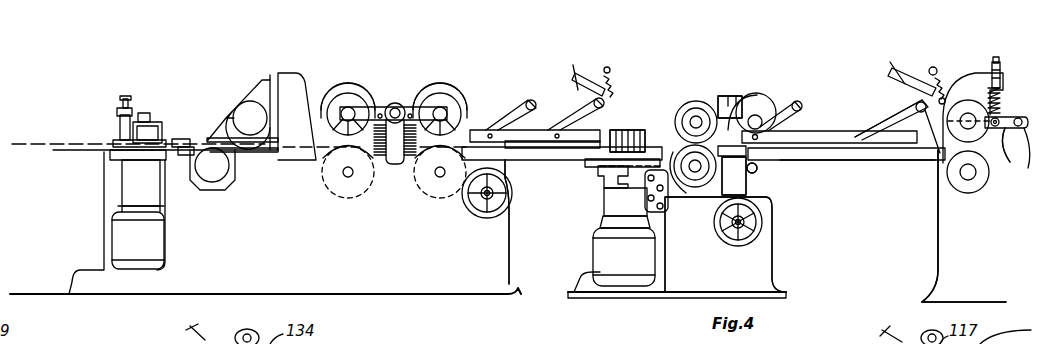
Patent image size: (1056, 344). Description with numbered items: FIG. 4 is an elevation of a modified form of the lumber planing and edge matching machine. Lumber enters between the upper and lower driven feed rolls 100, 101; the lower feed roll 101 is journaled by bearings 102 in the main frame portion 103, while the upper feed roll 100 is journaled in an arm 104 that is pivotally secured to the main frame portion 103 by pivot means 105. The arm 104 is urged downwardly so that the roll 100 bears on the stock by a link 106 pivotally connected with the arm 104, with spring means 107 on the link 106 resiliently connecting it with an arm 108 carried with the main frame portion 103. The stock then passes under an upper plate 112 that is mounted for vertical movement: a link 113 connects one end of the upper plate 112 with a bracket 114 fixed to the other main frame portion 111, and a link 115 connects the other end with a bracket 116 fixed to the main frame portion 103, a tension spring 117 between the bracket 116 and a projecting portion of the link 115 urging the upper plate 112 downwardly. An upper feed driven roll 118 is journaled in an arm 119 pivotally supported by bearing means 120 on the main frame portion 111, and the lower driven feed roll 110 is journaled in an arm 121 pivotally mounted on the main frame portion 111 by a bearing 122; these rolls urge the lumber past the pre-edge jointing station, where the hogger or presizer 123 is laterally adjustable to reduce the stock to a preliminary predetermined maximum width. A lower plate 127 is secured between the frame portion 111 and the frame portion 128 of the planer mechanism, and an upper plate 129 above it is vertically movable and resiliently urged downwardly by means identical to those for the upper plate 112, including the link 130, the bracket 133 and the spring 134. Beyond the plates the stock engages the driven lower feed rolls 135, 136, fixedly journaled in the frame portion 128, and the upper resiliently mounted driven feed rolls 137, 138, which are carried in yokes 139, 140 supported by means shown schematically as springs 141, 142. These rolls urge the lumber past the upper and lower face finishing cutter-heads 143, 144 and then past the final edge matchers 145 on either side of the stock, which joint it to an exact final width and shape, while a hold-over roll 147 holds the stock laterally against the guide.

The upper feed roll 100 is at (955, 134).
The lower feed roll 101 is at (958, 191).
The bearings 102 is at (958, 179).
The main frame portion 103 is at (940, 272).
The arm 104 is at (1008, 129).
The pivot means 105 is at (1028, 152).
The link 106 is at (996, 63).
The spring means 107 is at (1007, 97).
The arm 108 is at (970, 79).
The lower feed roll 110 is at (693, 174).
The main frame portion 111 is at (768, 282).
The upper plate 112 is at (866, 122).
The link 113 is at (784, 98).
The bracket 114 is at (808, 93).
The link 115 is at (900, 106).
The bracket 116 is at (900, 96).
The tension spring 117 is at (935, 66).
The upper feed driven roll 118 is at (693, 117).
The arm 119 is at (727, 97).
The bearing means 120 is at (753, 96).
The arm 121 is at (708, 196).
The bearing 122 is at (770, 167).
The hogger or presizer 123 is at (647, 130).
The lower plate 127 is at (568, 161).
The frame portion 128 is at (503, 274).
The upper plate 129 is at (555, 133).
The link 130 is at (500, 128).
The bracket 133 is at (605, 120).
The spring 134 is at (615, 80).
The lower feed roll 135 is at (440, 198).
The lower feed roll 136 is at (336, 190).
The upper feed roll 137 is at (472, 106).
The upper feed roll 138 is at (325, 119).
The yoke 139 is at (440, 86).
The yoke 140 is at (343, 84).
The spring 141 is at (401, 141).
The spring 142 is at (378, 155).
The upper face finishing cutter-head 143 is at (228, 117).
The lower face finishing cutter-head 144 is at (207, 176).
The final edge matchers 145 is at (145, 127).
The hold-over roll 147 is at (728, 150).